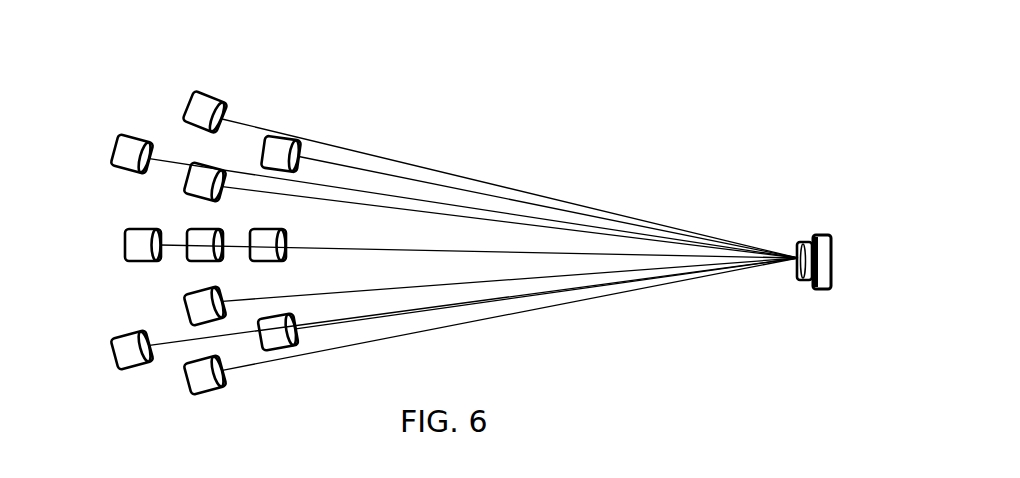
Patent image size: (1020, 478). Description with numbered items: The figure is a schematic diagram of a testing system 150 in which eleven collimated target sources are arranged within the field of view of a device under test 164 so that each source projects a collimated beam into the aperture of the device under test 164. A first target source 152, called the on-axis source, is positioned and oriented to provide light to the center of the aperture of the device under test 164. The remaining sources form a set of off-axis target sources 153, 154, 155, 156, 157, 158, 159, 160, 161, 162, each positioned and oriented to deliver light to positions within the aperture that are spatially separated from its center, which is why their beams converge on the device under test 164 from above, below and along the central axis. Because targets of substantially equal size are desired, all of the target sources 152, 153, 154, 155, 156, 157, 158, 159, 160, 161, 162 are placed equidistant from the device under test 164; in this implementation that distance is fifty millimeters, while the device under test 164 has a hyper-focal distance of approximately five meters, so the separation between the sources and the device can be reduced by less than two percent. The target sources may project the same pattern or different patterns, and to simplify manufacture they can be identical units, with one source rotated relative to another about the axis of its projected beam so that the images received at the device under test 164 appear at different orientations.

The system 150 is at (738, 72).
The first target source 152 is at (190, 228).
The off-axis target source 153 is at (186, 99).
The off-axis target source 154 is at (220, 199).
The off-axis target source 155 is at (184, 301).
The off-axis target source 156 is at (220, 388).
The off-axis target source 157 is at (113, 143).
The off-axis target source 158 is at (126, 238).
The off-axis target source 159 is at (113, 343).
The off-axis target source 160 is at (262, 161).
The off-axis target source 161 is at (290, 240).
The off-axis target source 162 is at (296, 322).
The device under test 164 is at (813, 236).